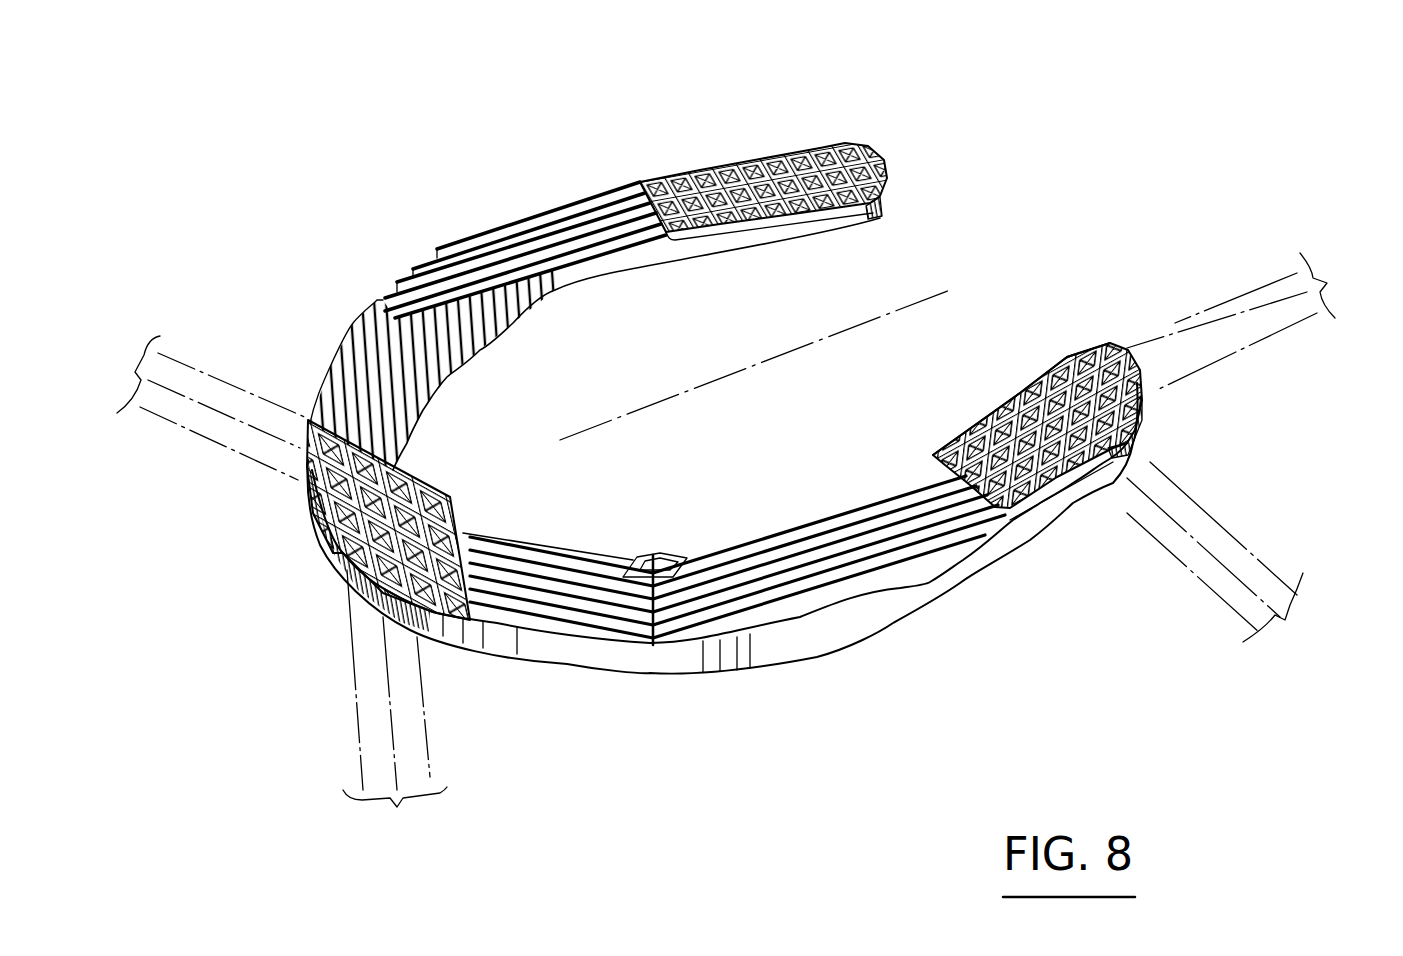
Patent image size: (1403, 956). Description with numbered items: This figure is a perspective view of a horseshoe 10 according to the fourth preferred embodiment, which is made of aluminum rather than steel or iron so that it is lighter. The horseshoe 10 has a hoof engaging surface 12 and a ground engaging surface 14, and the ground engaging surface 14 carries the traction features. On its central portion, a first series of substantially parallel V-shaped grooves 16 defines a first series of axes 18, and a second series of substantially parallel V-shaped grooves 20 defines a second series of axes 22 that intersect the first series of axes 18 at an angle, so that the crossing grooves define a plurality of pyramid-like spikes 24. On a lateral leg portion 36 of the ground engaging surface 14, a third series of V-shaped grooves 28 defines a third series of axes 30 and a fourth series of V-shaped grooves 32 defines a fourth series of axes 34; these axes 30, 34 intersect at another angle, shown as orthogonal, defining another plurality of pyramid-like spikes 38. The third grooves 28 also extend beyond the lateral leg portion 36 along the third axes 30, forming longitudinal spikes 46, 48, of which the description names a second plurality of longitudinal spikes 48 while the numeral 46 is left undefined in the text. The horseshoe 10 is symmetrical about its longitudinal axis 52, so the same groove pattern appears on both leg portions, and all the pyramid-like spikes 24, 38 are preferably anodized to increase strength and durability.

The horseshoe 10 is at (345, 175).
The hoof engaging surface 12 is at (688, 670).
The ground engaging surface 14 is at (657, 560).
The first series of substantially parallel V-shaped grooves 16 is at (303, 427).
The first series of axes 18 is at (195, 408).
The second series of substantially parallel V-shaped grooves 20 is at (415, 615).
The second series of axes 22 is at (395, 707).
The pyramid-like spikes 24 is at (407, 500).
The third series of substantially parallel V-shaped grooves 28 is at (1143, 393).
The third series of axes 30 is at (1248, 321).
The fourth series of substantially parallel V-shaped grooves 32 is at (1127, 443).
The fourth series of axes 34 is at (1228, 558).
The lateral leg portion 36 is at (1080, 320).
The pyramid-like spikes 38 is at (1113, 340).
The first layer lines 46 is at (505, 580).
The second plurality of longitudinal spikes 48 is at (860, 547).
The longitudinal axis 52 is at (790, 348).